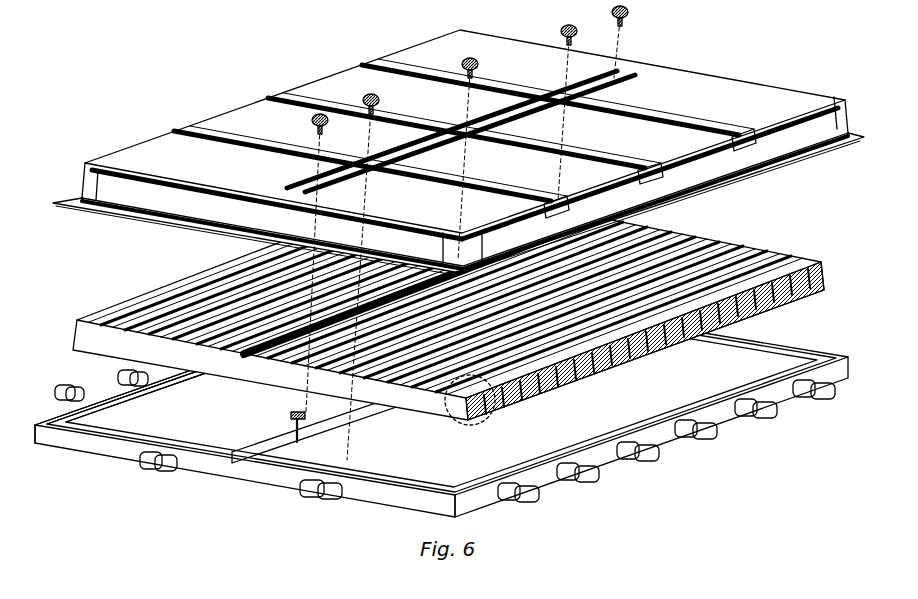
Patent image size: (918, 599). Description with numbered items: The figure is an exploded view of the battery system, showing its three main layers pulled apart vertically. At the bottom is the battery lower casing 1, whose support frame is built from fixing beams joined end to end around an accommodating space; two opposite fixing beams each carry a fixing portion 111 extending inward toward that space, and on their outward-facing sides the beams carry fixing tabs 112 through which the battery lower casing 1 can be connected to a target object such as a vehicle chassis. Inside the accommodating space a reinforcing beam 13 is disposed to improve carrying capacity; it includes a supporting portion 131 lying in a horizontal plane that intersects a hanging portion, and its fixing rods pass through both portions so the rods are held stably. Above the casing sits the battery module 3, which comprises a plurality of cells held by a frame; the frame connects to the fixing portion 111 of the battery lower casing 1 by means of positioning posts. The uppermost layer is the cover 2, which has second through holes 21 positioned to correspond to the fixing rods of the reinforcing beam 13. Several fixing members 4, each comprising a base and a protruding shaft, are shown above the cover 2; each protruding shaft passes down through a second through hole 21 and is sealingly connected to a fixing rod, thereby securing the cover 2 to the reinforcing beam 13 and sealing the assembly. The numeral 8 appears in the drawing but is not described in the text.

The battery lower casing 1 is at (441, 402).
The cover 2 is at (458, 152).
The battery module 3 is at (448, 313).
The fixing member 4 is at (562, 28).
The corner region 8 is at (490, 417).
The reinforcing beam 13 is at (289, 418).
The second through hole 21 is at (300, 186).
The fixing portion 111 is at (150, 410).
The fixing tabs 112 is at (715, 437).
The supporting portion 131 is at (365, 425).